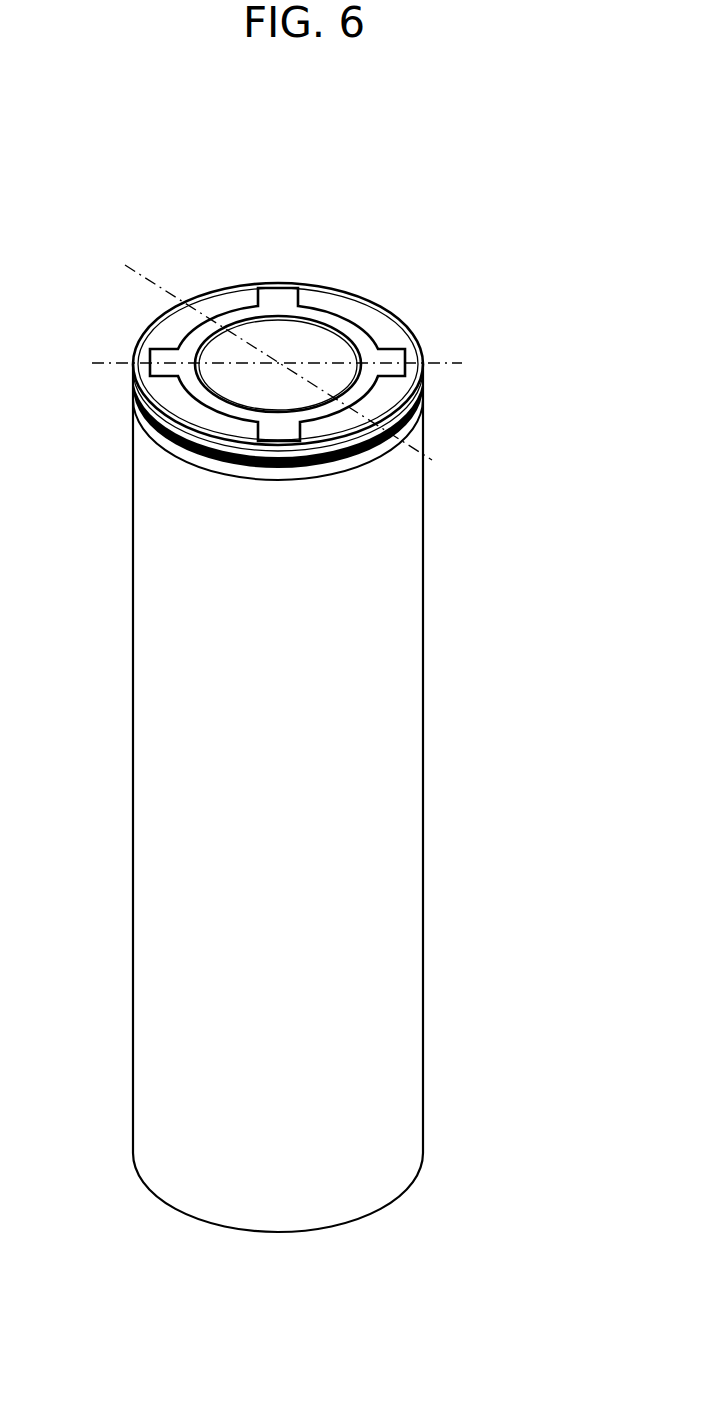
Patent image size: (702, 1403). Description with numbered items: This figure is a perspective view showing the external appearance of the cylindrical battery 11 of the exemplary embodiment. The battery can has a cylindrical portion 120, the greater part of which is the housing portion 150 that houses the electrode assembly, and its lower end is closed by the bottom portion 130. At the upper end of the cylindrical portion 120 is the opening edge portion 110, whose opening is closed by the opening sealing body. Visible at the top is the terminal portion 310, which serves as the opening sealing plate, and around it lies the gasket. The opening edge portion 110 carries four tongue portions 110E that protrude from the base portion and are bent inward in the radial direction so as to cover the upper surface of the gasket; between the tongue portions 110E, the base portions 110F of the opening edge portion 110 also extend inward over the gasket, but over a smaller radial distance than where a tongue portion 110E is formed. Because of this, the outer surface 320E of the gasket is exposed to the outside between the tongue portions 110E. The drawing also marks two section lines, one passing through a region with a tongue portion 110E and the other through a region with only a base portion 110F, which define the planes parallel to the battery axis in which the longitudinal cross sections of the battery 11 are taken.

The battery 11 is at (116, 188).
The opening edge portion 110 is at (447, 197).
The base portion 110F is at (275, 284).
The tongue portion 110E is at (362, 310).
The outer surface of gasket 320E is at (398, 352).
The terminal portion 310 is at (272, 343).
The housing portion 150 is at (392, 768).
The cylindrical portion 120 is at (278, 758).
The bottom portion 130 is at (293, 1198).